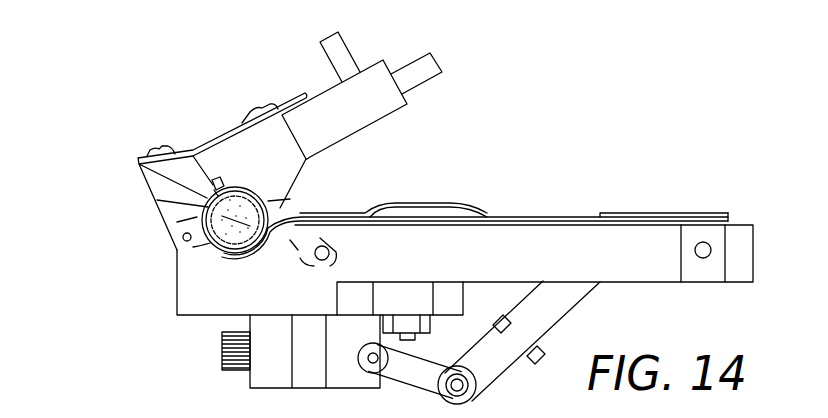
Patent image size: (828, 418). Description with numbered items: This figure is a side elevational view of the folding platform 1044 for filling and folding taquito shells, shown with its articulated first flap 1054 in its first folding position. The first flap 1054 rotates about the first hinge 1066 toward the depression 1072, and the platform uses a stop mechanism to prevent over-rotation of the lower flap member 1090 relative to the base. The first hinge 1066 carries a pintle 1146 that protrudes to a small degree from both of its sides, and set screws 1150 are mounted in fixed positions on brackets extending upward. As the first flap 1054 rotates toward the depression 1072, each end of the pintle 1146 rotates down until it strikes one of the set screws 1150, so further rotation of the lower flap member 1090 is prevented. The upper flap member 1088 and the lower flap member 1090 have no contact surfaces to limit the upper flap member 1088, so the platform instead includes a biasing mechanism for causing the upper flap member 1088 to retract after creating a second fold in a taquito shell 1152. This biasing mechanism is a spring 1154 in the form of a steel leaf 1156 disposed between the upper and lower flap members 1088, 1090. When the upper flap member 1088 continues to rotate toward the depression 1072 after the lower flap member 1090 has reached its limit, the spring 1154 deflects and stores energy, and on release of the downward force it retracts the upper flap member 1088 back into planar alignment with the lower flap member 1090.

The folding platform 1044 is at (481, 123).
The first flap 1054 is at (287, 86).
The first hinge 1066 is at (178, 250).
The depression 1072 is at (227, 259).
The upper flap member 1088 is at (383, 120).
The lower flap member 1090 is at (157, 200).
The pintle 1146 is at (218, 178).
The set screw 1150 is at (163, 198).
The taquito shell 1152 is at (528, 214).
The spring 1154 is at (160, 141).
The steel leaf 1156 is at (210, 146).